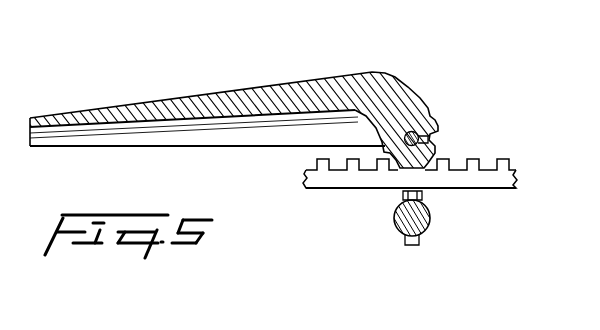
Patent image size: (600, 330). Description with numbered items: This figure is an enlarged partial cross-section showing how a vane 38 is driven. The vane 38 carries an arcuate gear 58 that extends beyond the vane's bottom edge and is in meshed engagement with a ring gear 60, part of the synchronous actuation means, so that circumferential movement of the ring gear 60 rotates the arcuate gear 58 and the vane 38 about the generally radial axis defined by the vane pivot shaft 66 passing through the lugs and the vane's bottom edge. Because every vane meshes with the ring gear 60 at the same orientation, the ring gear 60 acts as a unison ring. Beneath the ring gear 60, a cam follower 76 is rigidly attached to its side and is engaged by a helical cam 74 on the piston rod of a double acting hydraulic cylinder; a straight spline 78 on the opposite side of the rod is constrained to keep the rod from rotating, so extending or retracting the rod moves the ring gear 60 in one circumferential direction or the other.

The vane 38 is at (210, 93).
The arcuate gear 58 is at (416, 128).
The vane pivot shaft 66 is at (431, 140).
The ring gear 60 is at (493, 182).
The cam follower 76 is at (405, 197).
The helical cam 74 is at (427, 197).
The straight spline 78 is at (419, 245).